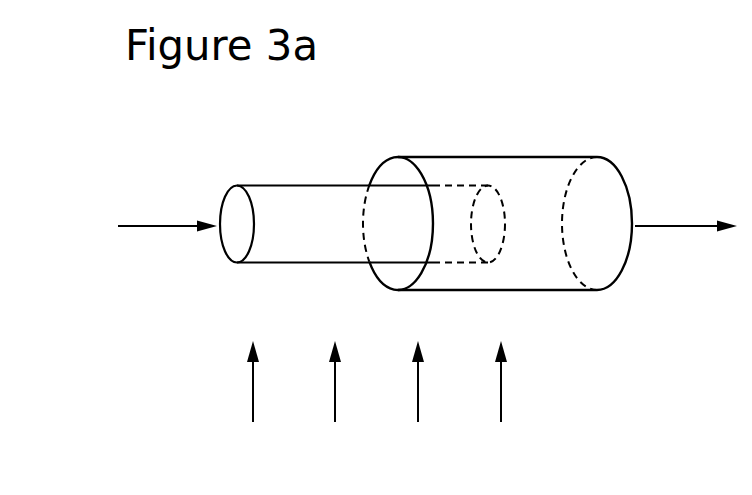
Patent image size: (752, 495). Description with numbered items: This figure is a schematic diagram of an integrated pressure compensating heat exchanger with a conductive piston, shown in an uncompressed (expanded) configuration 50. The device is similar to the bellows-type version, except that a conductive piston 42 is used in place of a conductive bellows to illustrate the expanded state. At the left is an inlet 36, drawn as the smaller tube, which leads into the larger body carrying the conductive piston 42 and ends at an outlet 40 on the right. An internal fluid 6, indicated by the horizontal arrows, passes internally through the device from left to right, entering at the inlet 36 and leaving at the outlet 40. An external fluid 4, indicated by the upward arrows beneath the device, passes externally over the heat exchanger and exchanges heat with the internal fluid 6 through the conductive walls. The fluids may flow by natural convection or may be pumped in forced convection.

The photoreactor assembly 50 is at (181, 173).
The inlet 36 is at (240, 186).
The conductive piston 42 is at (413, 157).
The outlet 40 is at (577, 157).
The internal fluid 6 is at (157, 224).
The external fluid 4 is at (377, 402).